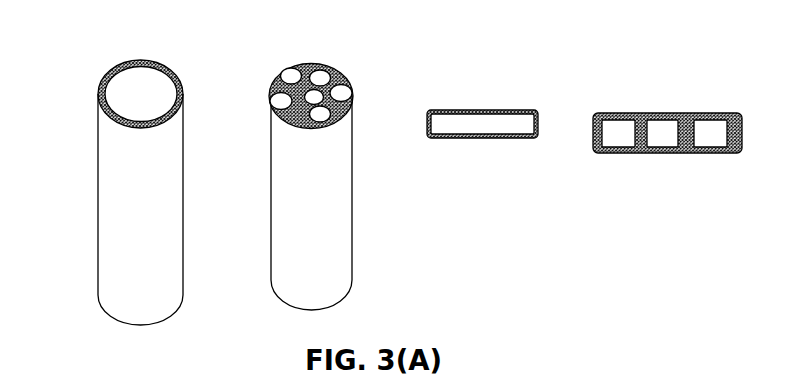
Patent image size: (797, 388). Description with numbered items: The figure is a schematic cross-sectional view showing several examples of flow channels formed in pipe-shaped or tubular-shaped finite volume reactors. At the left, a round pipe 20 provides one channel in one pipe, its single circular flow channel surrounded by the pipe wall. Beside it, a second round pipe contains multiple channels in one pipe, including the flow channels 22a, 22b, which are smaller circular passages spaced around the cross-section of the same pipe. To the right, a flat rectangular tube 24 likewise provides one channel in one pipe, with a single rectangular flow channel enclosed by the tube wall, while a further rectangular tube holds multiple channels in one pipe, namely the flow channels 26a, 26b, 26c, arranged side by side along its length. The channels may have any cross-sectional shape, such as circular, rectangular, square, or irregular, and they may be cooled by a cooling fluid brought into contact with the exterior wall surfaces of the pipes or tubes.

The pipe-shape finite volume reactor with one channel 20 is at (130, 92).
The flow channel 22a is at (295, 80).
The flow channel 22b is at (323, 78).
The tubular-shape finite volume reactor with one channel 24 is at (492, 125).
The flow channel 26a is at (613, 132).
The flow channel 26b is at (663, 130).
The flow channel 26c is at (705, 137).